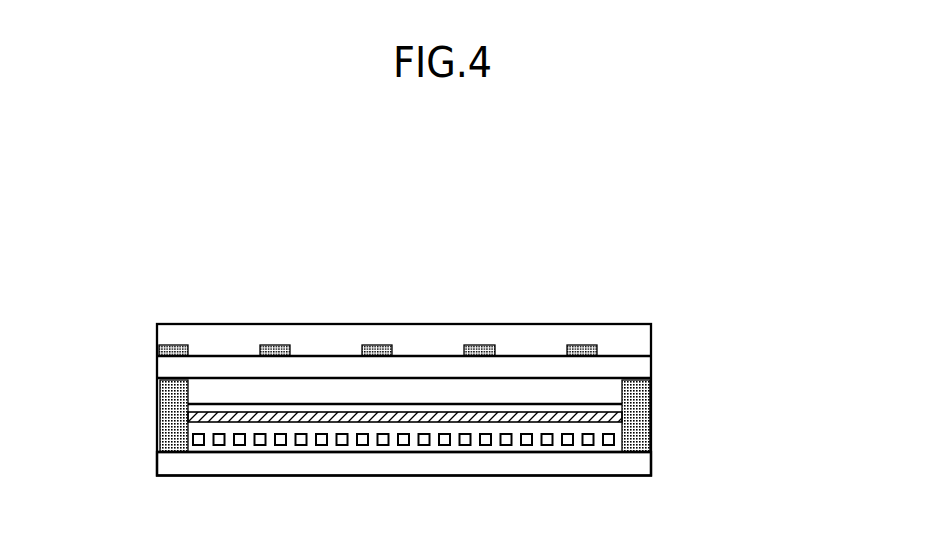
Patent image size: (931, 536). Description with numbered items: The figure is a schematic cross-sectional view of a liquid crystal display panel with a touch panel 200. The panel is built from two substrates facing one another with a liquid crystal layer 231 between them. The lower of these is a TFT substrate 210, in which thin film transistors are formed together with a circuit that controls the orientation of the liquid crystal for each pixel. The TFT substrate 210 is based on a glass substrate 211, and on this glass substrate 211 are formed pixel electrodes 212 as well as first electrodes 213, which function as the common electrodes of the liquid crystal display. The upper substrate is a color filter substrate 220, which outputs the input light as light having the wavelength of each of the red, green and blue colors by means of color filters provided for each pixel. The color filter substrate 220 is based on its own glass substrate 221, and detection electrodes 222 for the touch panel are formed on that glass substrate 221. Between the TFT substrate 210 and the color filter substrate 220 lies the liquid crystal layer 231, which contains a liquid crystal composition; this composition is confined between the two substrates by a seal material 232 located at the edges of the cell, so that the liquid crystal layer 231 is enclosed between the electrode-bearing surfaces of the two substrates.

The liquid crystal display panel with a touch panel 200 is at (480, 280).
The TFT substrate 210 is at (778, 405).
The glass substrate 211 is at (640, 463).
The pixel electrodes 212 is at (608, 438).
The first electrodes 213 is at (610, 417).
The color filter substrate 220 is at (778, 325).
The glass substrate 221 is at (640, 370).
The detection electrodes 222 is at (598, 348).
The liquid crystal layer 231 is at (198, 395).
The seal material 232 is at (165, 434).